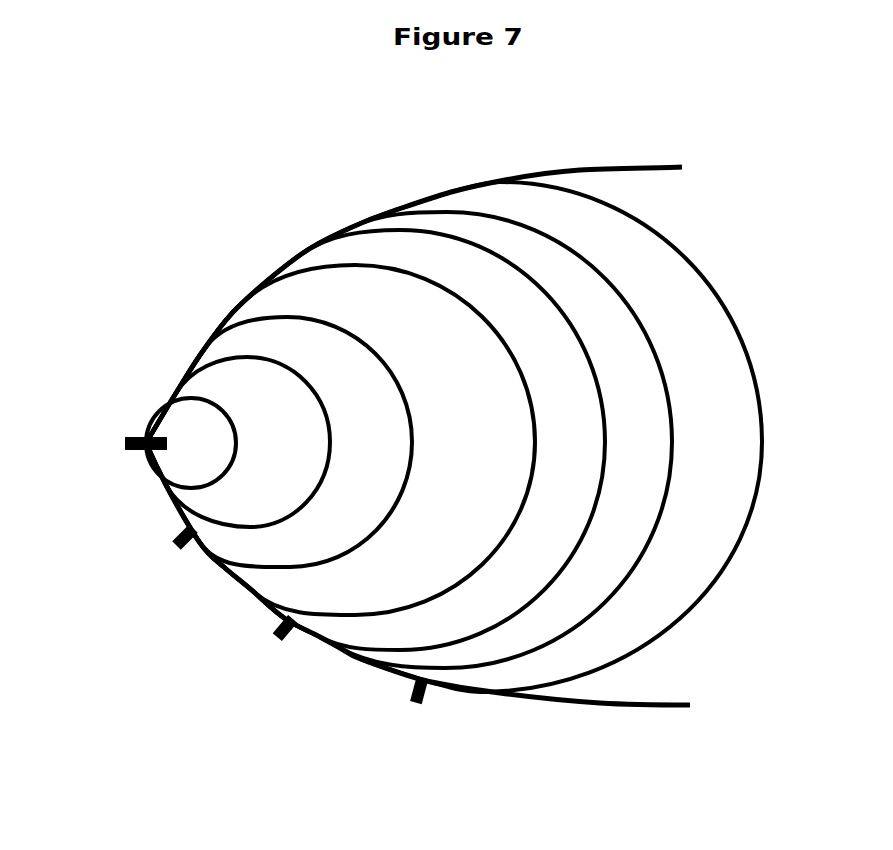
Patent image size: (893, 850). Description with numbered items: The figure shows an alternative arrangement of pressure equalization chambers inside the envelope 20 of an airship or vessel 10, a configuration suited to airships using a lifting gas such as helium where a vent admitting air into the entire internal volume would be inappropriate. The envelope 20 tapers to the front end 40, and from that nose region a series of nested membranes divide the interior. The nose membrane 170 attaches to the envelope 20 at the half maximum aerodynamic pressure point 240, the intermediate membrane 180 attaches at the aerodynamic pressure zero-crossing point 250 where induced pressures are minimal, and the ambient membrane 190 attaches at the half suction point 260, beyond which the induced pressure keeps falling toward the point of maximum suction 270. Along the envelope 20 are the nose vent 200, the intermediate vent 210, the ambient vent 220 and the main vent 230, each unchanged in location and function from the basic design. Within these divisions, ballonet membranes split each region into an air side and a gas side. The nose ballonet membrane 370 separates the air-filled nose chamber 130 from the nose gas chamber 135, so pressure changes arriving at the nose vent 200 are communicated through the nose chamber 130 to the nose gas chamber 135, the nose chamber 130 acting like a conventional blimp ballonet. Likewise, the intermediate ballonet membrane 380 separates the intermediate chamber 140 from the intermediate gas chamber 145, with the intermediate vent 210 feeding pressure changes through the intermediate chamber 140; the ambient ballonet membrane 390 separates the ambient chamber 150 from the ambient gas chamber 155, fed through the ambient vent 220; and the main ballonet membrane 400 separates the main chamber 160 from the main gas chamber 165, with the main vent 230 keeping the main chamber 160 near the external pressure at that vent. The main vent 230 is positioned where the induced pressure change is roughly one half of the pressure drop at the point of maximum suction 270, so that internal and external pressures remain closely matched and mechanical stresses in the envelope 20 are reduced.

The vessel 10 is at (398, 619).
The envelope 20 is at (398, 619).
The front end 40 is at (147, 489).
The nose chamber 130 is at (219, 452).
The nose gas chamber 135 is at (229, 370).
The intermediate chamber 140 is at (296, 442).
The intermediate gas chamber 145 is at (345, 516).
The ambient chamber 150 is at (488, 440).
The ambient gas chamber 155 is at (476, 440).
The main chamber 160 is at (461, 437).
The main gas chamber 165 is at (807, 434).
The nose membrane 170 is at (258, 353).
The intermediate membrane 180 is at (488, 568).
The ambient membrane 190 is at (634, 565).
The nose vent 200 is at (118, 449).
The intermediate vent 210 is at (172, 558).
The ambient vent 220 is at (278, 646).
The main vent 230 is at (413, 708).
The half maximum aerodynamic pressure point 240 is at (181, 378).
The aerodynamic pressure zero-crossing point 250 is at (384, 305).
The half suction point 260 is at (384, 292).
The point of maximum suction 270 is at (384, 251).
The nose ballonet membrane 370 is at (232, 476).
The intermediate ballonet membrane 380 is at (388, 527).
The ambient ballonet membrane 390 is at (600, 508).
The main ballonet membrane 400 is at (697, 259).